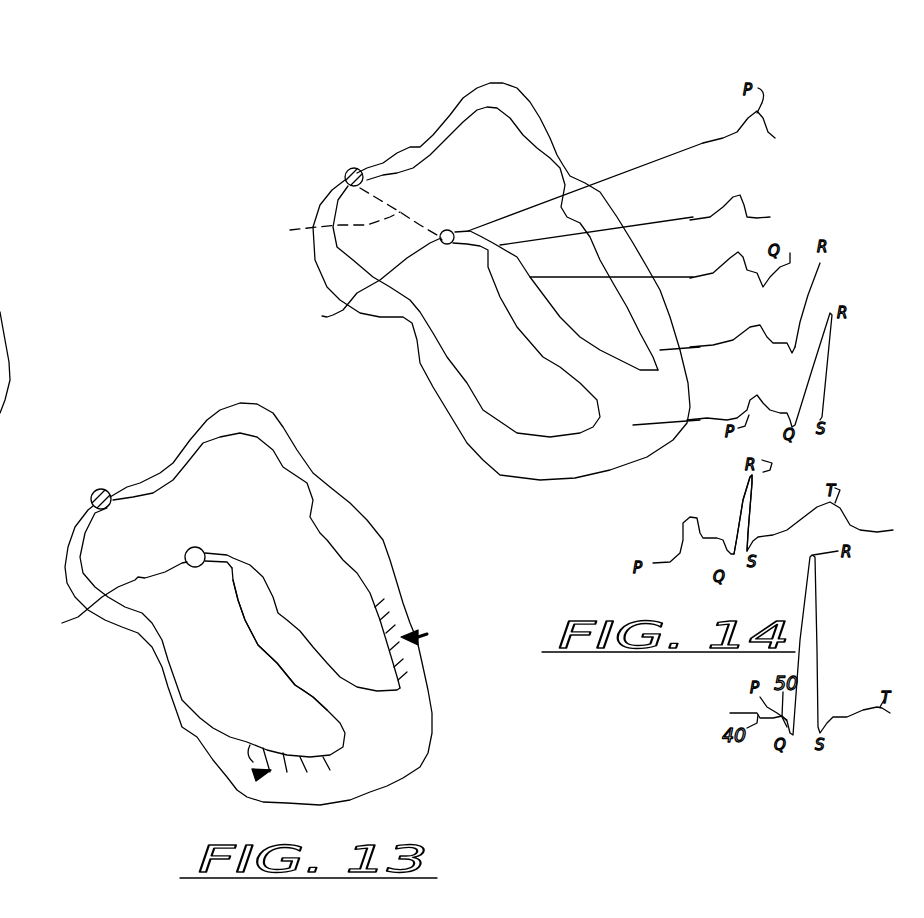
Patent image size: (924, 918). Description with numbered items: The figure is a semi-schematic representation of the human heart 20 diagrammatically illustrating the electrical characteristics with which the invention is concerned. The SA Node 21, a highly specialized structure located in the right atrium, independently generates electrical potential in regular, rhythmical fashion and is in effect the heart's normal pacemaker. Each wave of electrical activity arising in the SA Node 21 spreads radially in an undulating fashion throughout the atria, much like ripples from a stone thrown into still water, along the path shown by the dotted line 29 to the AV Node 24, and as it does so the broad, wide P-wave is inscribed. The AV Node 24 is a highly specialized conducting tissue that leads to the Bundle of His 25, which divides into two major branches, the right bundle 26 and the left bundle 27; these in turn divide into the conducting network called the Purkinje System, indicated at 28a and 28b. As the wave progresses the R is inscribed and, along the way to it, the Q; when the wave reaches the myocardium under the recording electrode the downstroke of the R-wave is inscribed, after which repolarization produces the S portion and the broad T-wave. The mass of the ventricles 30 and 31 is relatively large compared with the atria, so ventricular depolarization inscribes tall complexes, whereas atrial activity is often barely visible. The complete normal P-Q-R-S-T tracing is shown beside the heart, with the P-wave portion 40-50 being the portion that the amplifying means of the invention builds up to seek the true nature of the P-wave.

In FIG. 13, the human heart 20 is at (0, 226).
In FIG. 14, the SA Node 21 is at (350, 170).
In FIG. 13, the SA Node 21 is at (93, 497).
In FIG. 14, the AV Node 24 is at (367, 282).
In FIG. 13, the AV Node 24 is at (108, 598).
In FIG. 13, the Bundle of His 25 is at (233, 560).
In FIG. 13, the right bundle 26 is at (277, 658).
In FIG. 13, the left bundle 27 is at (290, 617).
In FIG. 13, the Purkinje System 28a is at (256, 775).
In FIG. 13, the Purkinje System 28b is at (427, 634).
In FIG. 14, the dotted line 29 is at (350, 214).
In FIG. 13, the ventricle 30 is at (243, 693).
In FIG. 13, the ventricle 31 is at (347, 617).
In FIG. 14, the P-wave portion 40 is at (680, 533).
In FIG. 14, the P-wave portion 50 is at (710, 535).